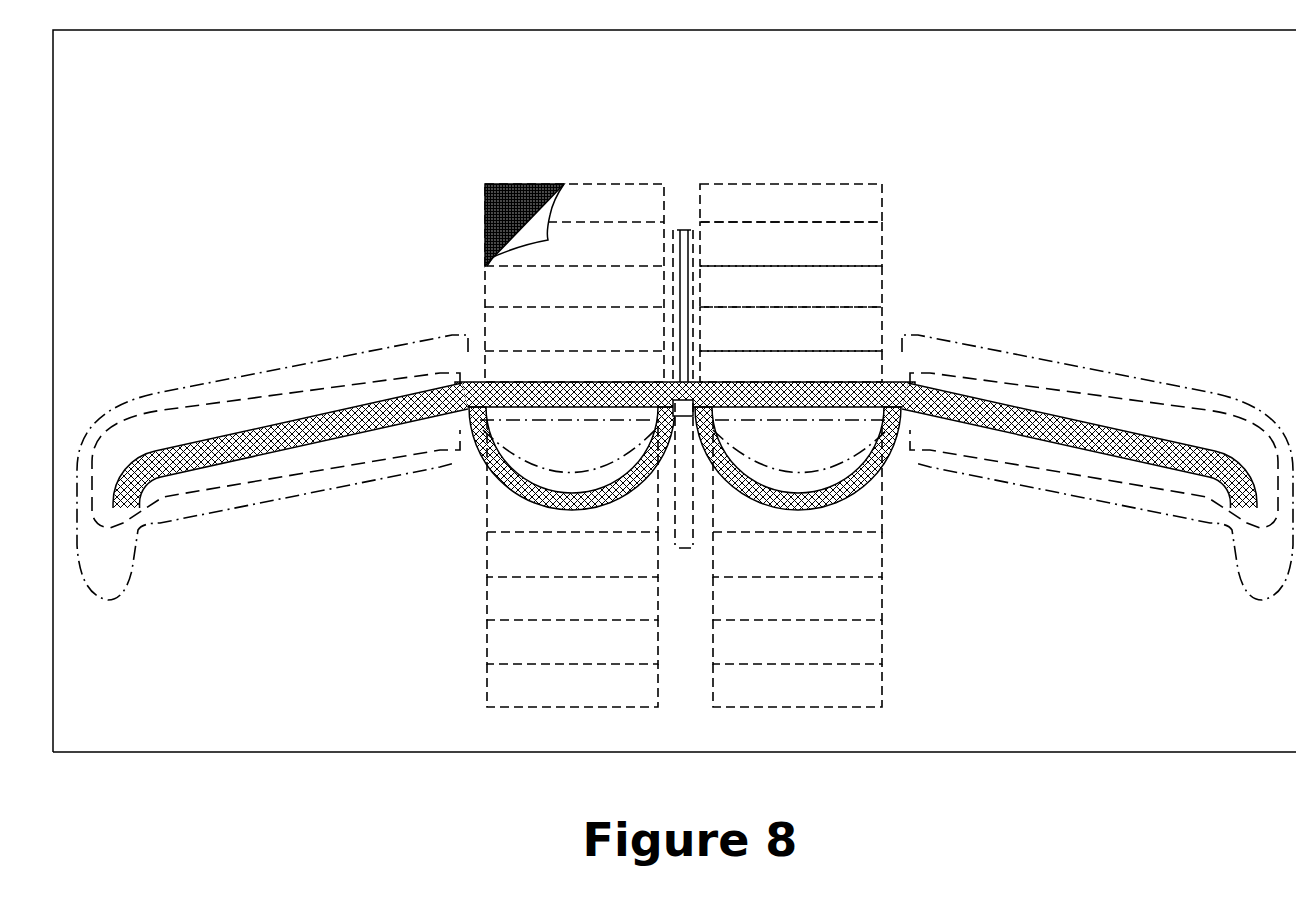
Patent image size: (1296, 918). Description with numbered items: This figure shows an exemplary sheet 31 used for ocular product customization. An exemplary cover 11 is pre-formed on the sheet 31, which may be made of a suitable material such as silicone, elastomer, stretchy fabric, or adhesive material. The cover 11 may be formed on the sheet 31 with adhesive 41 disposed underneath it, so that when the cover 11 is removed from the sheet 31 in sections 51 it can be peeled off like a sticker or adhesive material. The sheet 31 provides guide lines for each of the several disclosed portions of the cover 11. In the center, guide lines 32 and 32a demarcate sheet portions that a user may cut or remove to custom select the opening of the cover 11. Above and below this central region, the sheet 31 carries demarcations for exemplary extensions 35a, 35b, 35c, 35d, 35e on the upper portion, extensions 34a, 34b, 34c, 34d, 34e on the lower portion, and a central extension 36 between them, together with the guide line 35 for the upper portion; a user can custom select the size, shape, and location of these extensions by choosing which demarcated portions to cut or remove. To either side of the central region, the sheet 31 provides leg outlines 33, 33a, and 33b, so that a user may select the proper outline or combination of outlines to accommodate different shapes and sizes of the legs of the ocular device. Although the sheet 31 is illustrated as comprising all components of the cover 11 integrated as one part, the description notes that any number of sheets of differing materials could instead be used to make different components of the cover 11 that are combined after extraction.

The sheet 31 is at (508, 237).
The cover 11 is at (1008, 424).
The guide line for opening 32 is at (546, 478).
The guide line for opening 32a is at (553, 424).
The leg outline 33 is at (190, 432).
The leg outline 33a is at (290, 383).
The leg outline 33b is at (352, 350).
The extension 34a is at (886, 532).
The extension 34b is at (886, 577).
The extension 34c is at (886, 620).
The extension 34d is at (886, 664).
The extension 34e is at (886, 707).
The guide line 35 is at (574, 283).
The extension 35a is at (840, 350).
The extension 35b is at (797, 305).
The extension 35c is at (757, 263).
The extension 35d is at (722, 219).
The extension 35e is at (743, 182).
The extension 36 is at (682, 226).
The adhesive 41 is at (531, 226).
The sections 51 is at (484, 215).